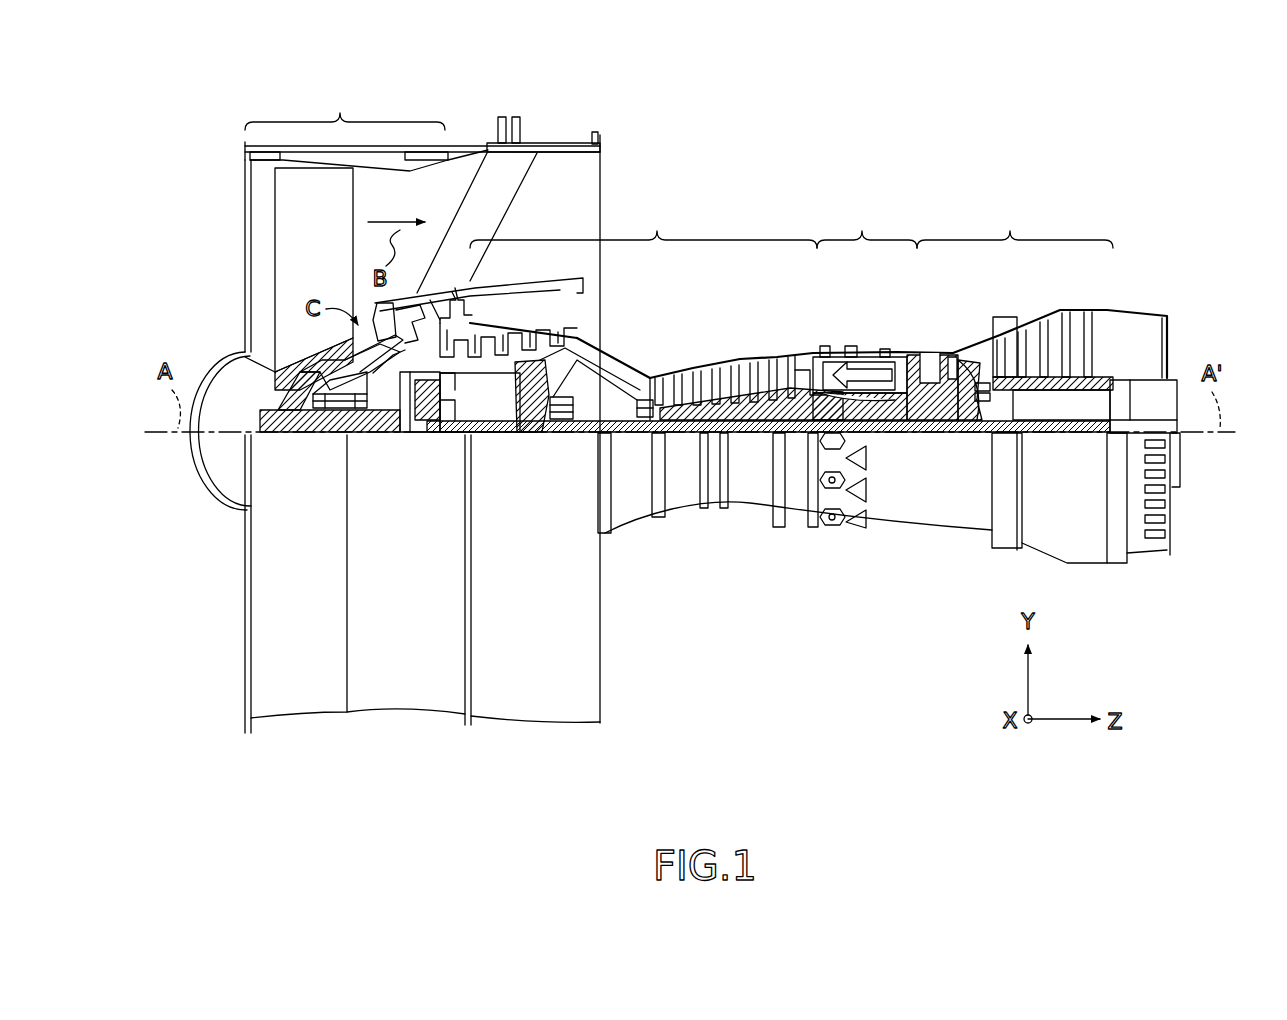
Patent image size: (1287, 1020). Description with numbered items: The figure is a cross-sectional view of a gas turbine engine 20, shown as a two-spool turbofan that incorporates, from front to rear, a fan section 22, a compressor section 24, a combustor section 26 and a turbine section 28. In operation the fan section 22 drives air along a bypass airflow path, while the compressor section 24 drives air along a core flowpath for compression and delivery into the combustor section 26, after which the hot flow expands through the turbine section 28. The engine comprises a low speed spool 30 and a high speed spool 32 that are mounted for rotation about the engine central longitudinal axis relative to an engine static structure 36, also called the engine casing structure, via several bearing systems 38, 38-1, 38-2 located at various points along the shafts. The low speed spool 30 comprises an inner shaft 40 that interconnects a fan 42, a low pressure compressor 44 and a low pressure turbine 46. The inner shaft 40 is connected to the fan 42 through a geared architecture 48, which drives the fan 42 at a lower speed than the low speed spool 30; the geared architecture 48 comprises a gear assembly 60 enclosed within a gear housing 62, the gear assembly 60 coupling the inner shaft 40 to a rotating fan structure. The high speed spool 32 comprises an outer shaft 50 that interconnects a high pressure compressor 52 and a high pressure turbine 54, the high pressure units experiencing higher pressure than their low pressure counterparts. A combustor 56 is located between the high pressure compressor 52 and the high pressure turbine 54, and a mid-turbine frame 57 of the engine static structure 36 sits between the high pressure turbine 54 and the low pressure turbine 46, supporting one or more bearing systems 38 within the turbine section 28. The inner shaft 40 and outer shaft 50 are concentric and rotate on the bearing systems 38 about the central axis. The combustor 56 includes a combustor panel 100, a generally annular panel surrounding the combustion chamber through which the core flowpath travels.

The gas turbine engine 20 is at (912, 140).
The fan section 22 is at (345, 107).
The compressor section 24 is at (643, 224).
The combustor section 26 is at (867, 224).
The turbine section 28 is at (1015, 224).
The low speed spool 30 is at (757, 445).
The high speed spool 32 is at (800, 378).
The engine static structure 36 is at (220, 740).
The bearing system 38 is at (975, 436).
The bearing system 38-1 is at (322, 412).
The bearing system 38-2 is at (556, 420).
The inner shaft 40 is at (620, 436).
The fan 42 is at (315, 277).
The low pressure compressor 44 is at (570, 332).
The low pressure turbine 46 is at (1050, 315).
The geared architecture 48 is at (420, 468).
The outer shaft 50 is at (876, 436).
The high pressure compressor 52 is at (762, 388).
The high pressure turbine 54 is at (930, 353).
The combustor 56 is at (850, 370).
The mid-turbine frame 57 is at (975, 345).
The gear assembly 60 is at (455, 401).
The gear housing 62 is at (455, 381).
The combustor panel 100 is at (870, 362).